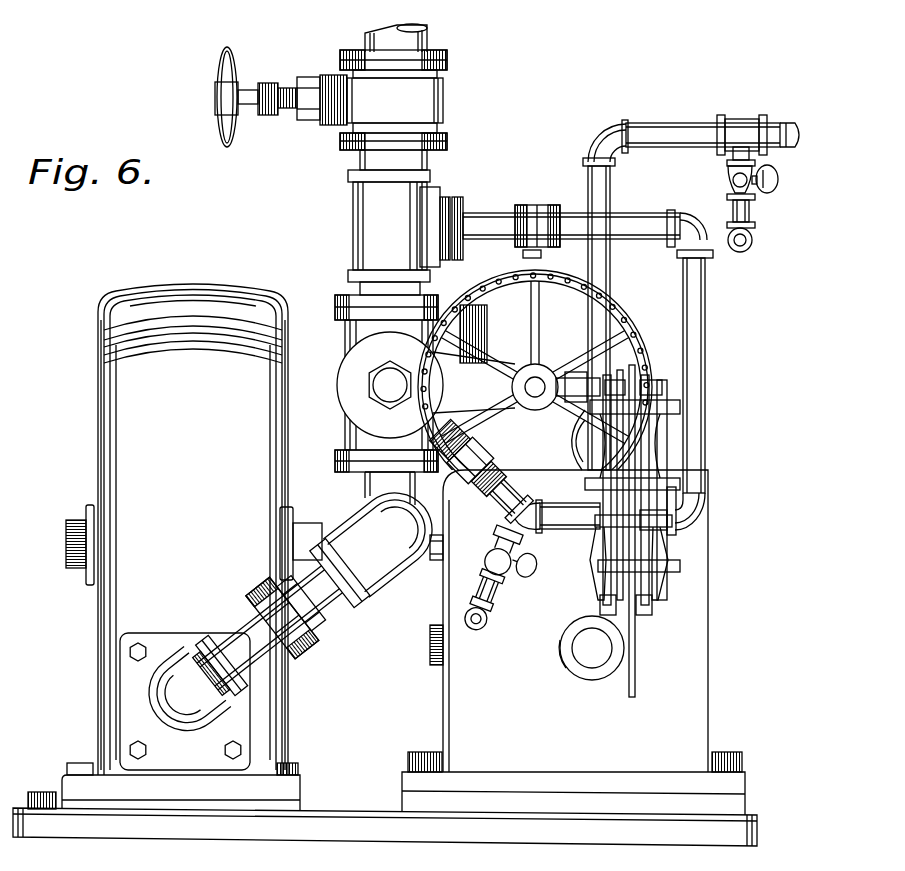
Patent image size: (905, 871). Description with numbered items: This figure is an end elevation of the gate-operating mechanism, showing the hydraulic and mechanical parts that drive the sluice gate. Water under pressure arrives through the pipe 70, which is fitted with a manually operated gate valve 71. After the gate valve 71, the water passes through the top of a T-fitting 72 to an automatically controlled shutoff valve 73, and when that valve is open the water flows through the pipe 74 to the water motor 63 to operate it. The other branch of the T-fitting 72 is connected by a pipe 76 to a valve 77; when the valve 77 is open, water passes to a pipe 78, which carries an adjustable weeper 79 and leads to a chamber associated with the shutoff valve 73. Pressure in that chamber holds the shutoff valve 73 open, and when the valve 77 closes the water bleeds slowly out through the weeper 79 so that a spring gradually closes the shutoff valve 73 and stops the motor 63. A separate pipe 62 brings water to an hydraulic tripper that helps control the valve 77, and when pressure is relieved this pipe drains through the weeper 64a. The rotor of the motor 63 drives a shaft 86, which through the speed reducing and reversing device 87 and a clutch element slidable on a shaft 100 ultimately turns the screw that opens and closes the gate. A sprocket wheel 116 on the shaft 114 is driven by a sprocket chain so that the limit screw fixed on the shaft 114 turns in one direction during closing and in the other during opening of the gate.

The pipe 62 is at (660, 130).
The water motor 63 is at (194, 529).
The weeper 64a is at (733, 208).
The pipe 70 is at (425, 33).
The gate valve 71 is at (357, 88).
The T-fitting 72 is at (405, 222).
The shutoff valve 73 is at (352, 393).
The pipe 74 is at (257, 683).
The pipe 76 is at (687, 282).
The valve 77 is at (660, 513).
The pipe 78 is at (547, 532).
The adjustable weeper 79 is at (502, 592).
The shaft 86 is at (433, 567).
The speed reducing and reversing device 87 is at (575, 568).
The shaft 100 is at (587, 662).
The shaft 114 is at (526, 388).
The sprocket wheel 116 is at (537, 317).